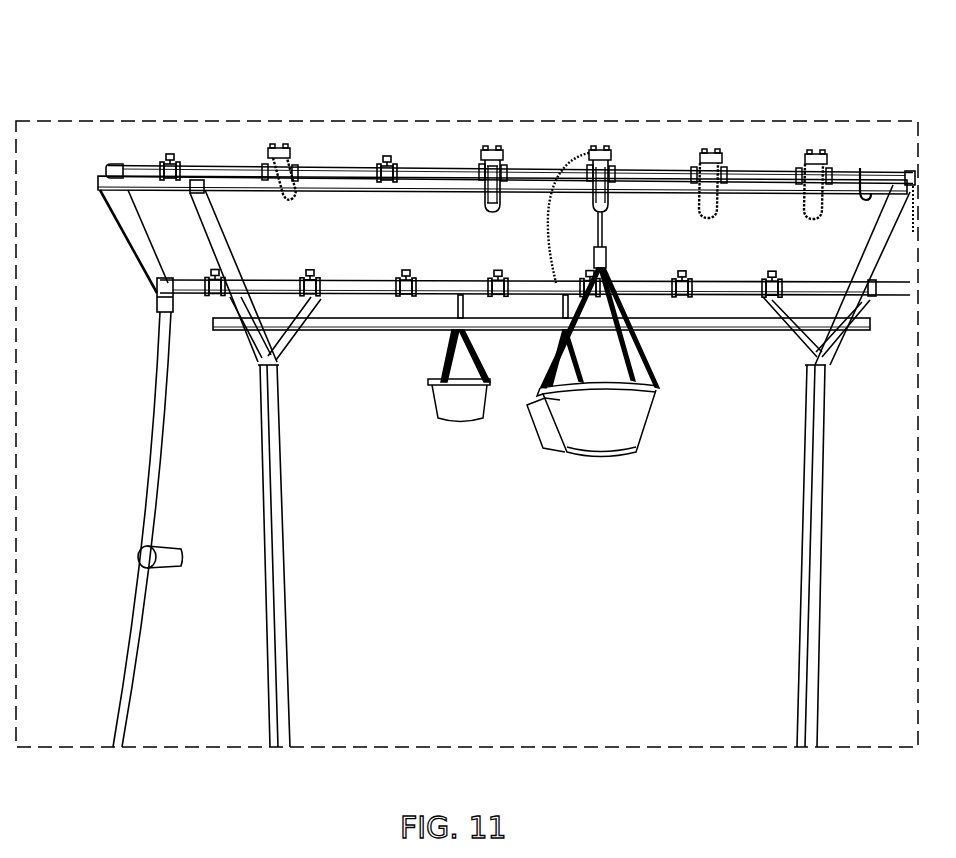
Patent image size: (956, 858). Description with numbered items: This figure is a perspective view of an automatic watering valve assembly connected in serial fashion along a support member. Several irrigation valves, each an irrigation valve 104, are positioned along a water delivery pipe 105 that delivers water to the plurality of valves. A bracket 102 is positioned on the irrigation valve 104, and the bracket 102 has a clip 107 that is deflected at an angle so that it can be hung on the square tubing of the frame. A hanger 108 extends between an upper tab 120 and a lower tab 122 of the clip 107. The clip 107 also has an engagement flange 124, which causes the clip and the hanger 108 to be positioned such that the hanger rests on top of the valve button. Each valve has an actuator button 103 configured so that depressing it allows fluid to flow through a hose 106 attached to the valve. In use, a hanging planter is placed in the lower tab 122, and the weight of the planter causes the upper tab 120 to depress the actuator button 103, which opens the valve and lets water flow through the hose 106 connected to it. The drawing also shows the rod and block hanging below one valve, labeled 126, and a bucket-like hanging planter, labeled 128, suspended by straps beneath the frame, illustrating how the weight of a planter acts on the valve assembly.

The bracket 102 is at (296, 150).
The actuator button 103 is at (706, 150).
The irrigation valve 104 is at (270, 150).
The water delivery pipe 105 is at (353, 178).
The hose 106 is at (589, 152).
The clip 107 is at (606, 150).
The hanger 108 is at (812, 218).
The upper tab 120 is at (486, 150).
The lower tab 122 is at (493, 213).
The engagement flange 124 is at (497, 150).
The hanger rod and block 126 is at (608, 214).
The bucket 128 is at (603, 456).